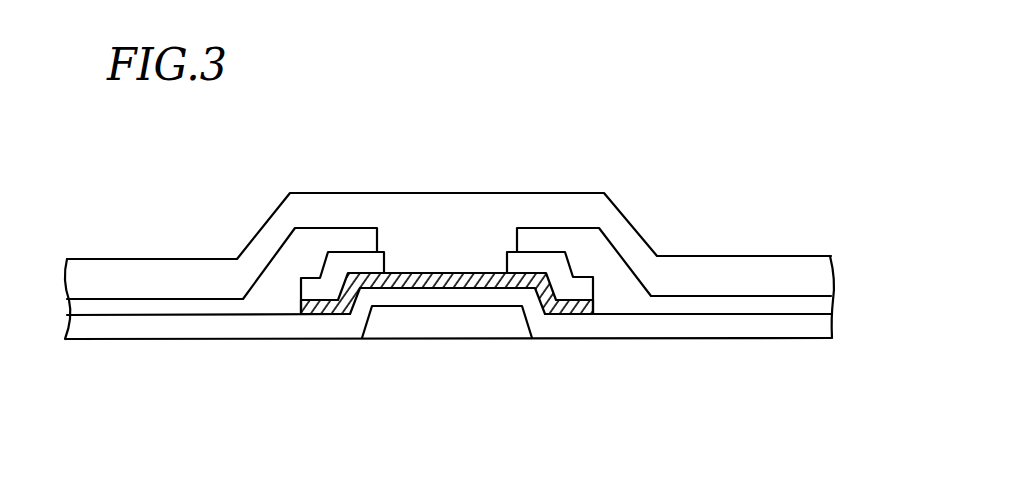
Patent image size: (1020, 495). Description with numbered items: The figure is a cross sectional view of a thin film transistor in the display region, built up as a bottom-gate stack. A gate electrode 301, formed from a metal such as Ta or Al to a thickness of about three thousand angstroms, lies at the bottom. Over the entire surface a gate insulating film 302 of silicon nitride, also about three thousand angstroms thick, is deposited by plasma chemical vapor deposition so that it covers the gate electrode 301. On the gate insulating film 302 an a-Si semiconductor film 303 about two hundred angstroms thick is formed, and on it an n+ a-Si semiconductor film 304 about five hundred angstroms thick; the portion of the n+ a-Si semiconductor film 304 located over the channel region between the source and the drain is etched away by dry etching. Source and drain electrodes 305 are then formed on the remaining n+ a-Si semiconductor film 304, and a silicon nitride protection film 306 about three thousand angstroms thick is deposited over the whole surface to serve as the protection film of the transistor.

The gate electrode 301 is at (452, 328).
The gate insulating film 302 is at (627, 328).
The a-Si semiconductor film 303 is at (432, 274).
The n+ a-Si semiconductor film 304 is at (537, 260).
The source and drain electrodes 305 is at (298, 242).
The protection film 306 is at (358, 207).